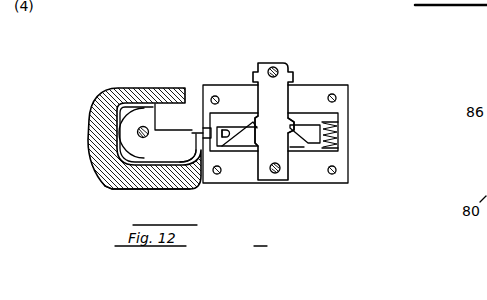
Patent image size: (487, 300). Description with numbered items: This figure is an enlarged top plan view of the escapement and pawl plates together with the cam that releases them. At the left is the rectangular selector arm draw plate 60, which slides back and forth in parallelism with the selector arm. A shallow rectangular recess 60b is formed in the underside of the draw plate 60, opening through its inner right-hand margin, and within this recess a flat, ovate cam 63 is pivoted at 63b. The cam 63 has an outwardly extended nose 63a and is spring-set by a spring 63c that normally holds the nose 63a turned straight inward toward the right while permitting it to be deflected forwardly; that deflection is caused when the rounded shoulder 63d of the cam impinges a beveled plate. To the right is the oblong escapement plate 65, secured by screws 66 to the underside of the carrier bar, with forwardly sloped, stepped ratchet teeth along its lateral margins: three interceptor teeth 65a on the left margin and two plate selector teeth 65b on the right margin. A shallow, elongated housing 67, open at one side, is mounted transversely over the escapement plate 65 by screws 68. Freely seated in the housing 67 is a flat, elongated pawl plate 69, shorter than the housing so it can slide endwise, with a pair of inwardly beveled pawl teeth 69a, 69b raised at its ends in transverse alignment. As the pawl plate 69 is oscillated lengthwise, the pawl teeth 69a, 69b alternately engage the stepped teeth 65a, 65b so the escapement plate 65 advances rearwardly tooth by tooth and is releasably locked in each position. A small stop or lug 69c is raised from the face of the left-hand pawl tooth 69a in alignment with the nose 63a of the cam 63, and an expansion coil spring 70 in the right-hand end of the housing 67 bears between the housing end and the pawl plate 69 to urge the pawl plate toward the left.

The selector arm draw plate 60 is at (122, 88).
The recess 60b is at (165, 107).
The cam 63 is at (140, 103).
The nose 63a is at (203, 130).
The pivot 63b is at (138, 132).
The spring 63c is at (128, 162).
The rounded shoulder 63d is at (203, 143).
The escapement plate 65 is at (285, 61).
The interceptor teeth 65a is at (257, 112).
The plate selector teeth 65b is at (296, 122).
The screws 66 is at (271, 67).
The housing 67 is at (352, 163).
The screws 68 is at (336, 98).
The pawl plate 69 is at (304, 154).
The left hand pawl tooth 69a is at (252, 125).
The right hand pawl tooth 69b is at (292, 125).
The stop or lug 69c is at (223, 137).
The expansion coil spring 70 is at (334, 122).